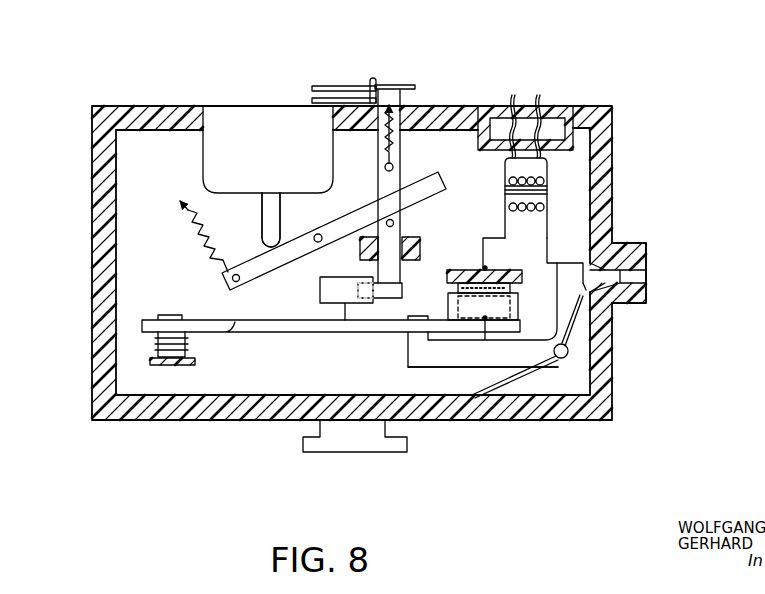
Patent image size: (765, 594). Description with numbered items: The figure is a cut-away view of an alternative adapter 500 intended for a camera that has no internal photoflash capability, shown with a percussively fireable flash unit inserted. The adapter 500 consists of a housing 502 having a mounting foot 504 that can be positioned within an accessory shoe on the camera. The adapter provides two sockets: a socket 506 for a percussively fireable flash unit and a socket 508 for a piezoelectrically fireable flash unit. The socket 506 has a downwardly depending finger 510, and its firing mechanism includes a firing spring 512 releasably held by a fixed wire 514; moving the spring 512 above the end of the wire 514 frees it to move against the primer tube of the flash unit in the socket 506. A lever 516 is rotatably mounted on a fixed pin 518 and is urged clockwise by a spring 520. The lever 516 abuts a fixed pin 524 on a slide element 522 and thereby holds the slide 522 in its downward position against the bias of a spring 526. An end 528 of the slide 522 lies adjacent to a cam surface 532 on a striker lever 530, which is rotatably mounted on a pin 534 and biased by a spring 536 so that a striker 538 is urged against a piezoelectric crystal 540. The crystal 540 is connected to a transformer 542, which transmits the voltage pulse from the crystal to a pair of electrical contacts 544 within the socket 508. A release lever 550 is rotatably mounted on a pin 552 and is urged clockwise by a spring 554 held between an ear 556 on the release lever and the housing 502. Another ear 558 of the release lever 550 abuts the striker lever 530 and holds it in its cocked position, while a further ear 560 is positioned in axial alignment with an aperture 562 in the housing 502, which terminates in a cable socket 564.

The adapter 500 is at (553, 424).
The housing 502 is at (590, 412).
The mounting foot 504 is at (345, 440).
The socket 506 is at (237, 118).
The socket 508 is at (563, 102).
The finger 510 is at (262, 240).
The firing spring 512 is at (332, 85).
The fixed wire 514 is at (373, 78).
The lever 516 is at (420, 184).
The fixed pin 518 is at (316, 243).
The spring 520 is at (190, 221).
The slide element 522 is at (422, 57).
The fixed pin 524 is at (396, 223).
The spring 526 is at (388, 153).
The end 528 is at (384, 298).
The striker lever 530 is at (435, 322).
The cam surface 532 is at (337, 292).
The pin 534 is at (166, 352).
The spring 536 is at (188, 348).
The striker 538 is at (470, 300).
The piezoelectric crystal 540 is at (488, 268).
The transformer 542 is at (552, 177).
The electrical contacts 544 is at (550, 58).
The release lever 550 is at (462, 358).
The pin 552 is at (572, 360).
The spring 554 is at (580, 355).
The ear 556 is at (586, 345).
The ear 558 is at (412, 338).
The ear 560 is at (620, 292).
The aperture 562 is at (614, 272).
The cable socket 564 is at (636, 278).